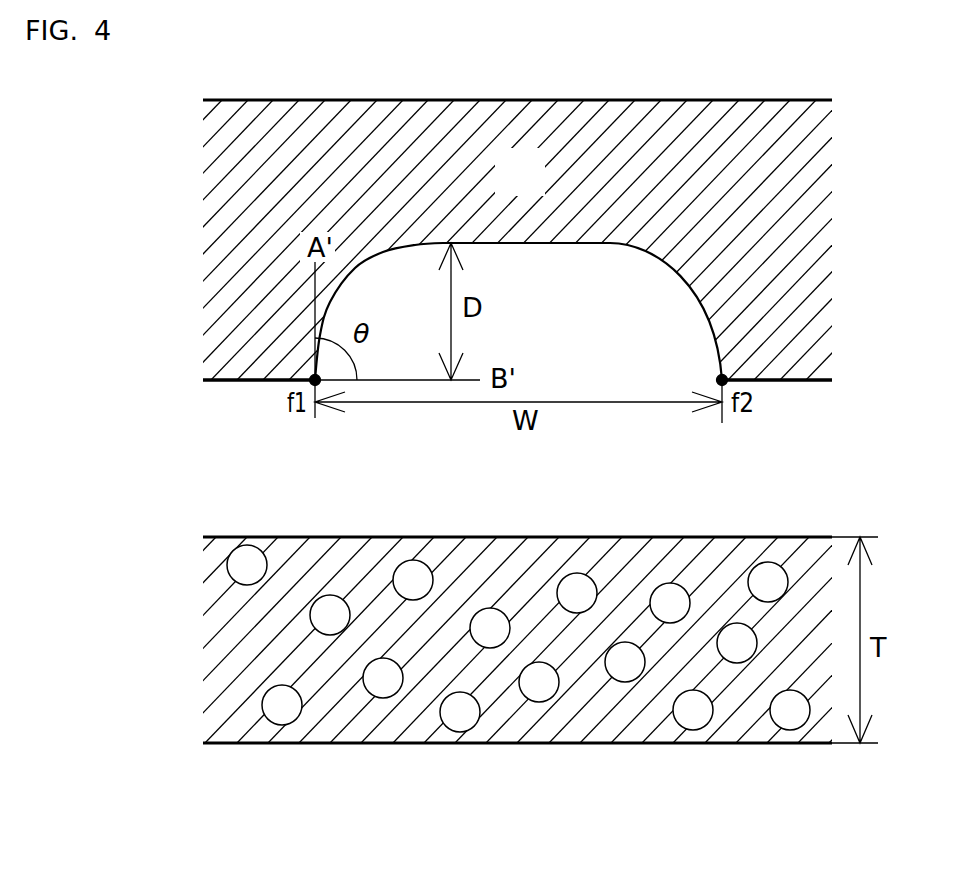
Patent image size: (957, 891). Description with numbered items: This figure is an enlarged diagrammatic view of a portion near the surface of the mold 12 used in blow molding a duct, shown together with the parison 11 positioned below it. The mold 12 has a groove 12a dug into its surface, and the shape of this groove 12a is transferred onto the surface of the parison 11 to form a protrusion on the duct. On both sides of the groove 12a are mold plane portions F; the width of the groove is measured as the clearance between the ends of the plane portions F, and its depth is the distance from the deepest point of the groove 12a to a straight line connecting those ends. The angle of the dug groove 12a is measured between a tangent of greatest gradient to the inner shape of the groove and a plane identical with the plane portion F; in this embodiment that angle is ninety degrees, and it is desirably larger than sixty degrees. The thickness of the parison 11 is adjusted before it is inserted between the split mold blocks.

The parison 11 is at (520, 743).
The mold 12 is at (537, 186).
The groove 12a is at (687, 293).
The mold plane portion F is at (797, 445).